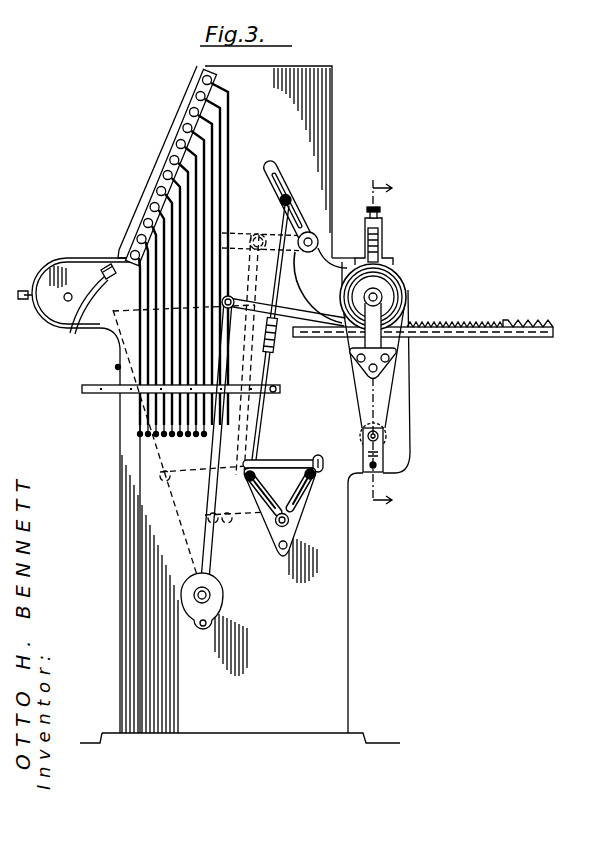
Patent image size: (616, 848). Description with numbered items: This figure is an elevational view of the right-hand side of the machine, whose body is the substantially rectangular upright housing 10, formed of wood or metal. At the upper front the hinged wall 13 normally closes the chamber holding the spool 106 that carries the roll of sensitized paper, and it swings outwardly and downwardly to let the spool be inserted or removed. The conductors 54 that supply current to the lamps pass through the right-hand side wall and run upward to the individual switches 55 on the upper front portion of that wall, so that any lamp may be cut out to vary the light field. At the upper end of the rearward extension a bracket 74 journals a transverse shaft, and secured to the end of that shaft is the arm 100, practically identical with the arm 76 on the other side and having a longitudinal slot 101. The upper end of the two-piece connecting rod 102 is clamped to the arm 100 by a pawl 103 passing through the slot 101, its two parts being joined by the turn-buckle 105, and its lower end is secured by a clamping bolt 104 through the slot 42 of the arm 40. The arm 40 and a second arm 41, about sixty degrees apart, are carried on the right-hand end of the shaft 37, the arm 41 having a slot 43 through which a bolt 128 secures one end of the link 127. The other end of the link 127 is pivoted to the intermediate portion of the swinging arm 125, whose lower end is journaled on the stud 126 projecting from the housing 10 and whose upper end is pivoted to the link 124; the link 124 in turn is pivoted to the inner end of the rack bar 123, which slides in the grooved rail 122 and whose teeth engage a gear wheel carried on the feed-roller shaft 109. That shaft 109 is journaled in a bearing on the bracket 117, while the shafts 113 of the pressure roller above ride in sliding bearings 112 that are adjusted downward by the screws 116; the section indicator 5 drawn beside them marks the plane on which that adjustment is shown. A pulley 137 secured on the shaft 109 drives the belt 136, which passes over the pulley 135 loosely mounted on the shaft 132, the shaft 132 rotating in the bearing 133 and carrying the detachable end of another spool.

The housing 10 is at (358, 601).
The wall 13 is at (100, 331).
The spool 106 is at (66, 300).
The switches 55 is at (184, 163).
The conductors 54 is at (203, 200).
The swinging arm 125 is at (210, 508).
The stud 126 is at (208, 597).
The link 124 is at (284, 314).
The bracket 74 is at (314, 287).
The arm 100 is at (314, 194).
The slot 101 is at (272, 167).
The arm 76 is at (318, 243).
The pawl 103 is at (281, 201).
The connecting rod 102 is at (263, 417).
The turn-buckle 105 is at (277, 338).
The clamping bolt 104 is at (256, 449).
The link 127 is at (297, 457).
The bolt 128 is at (320, 466).
The shaft 37 is at (294, 531).
The slot 42 is at (264, 491).
The slot 43 is at (301, 490).
The arm 41 is at (298, 504).
The arm 40 is at (267, 511).
The grooved rail 122 is at (427, 333).
The bracket 117 is at (412, 324).
The rack bar 123 is at (528, 325).
The belt 136 is at (398, 392).
The shaft 109 is at (393, 288).
The pulley 137 is at (392, 301).
The bearing 112 is at (388, 262).
The shaft 113 is at (385, 250).
The screw 116 is at (382, 213).
The pulley 135 is at (385, 426).
The shaft 132 is at (384, 437).
The bearing 133 is at (383, 452).
The section line 5 is at (379, 343).